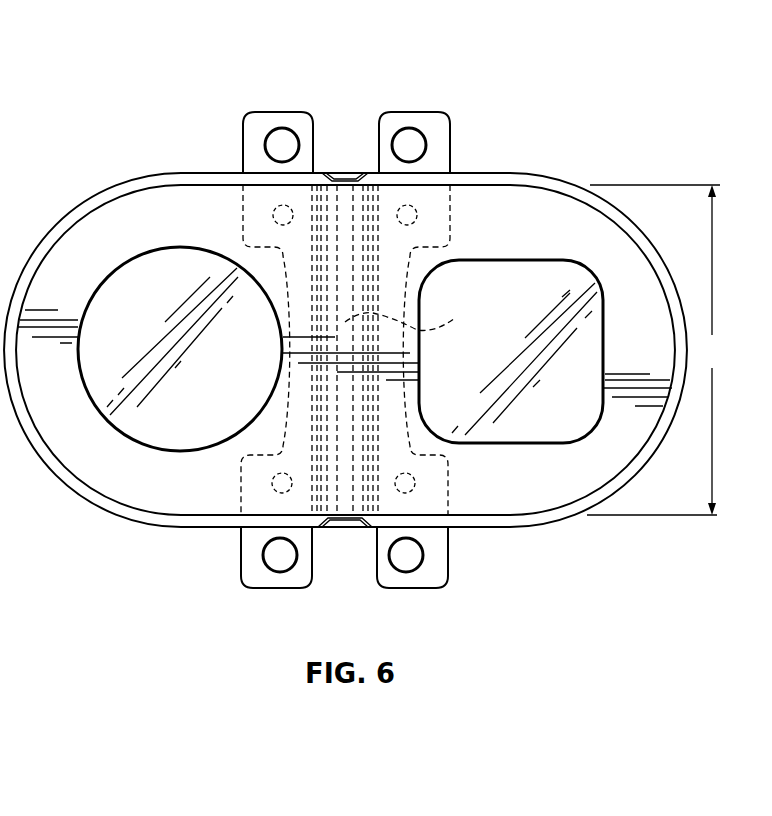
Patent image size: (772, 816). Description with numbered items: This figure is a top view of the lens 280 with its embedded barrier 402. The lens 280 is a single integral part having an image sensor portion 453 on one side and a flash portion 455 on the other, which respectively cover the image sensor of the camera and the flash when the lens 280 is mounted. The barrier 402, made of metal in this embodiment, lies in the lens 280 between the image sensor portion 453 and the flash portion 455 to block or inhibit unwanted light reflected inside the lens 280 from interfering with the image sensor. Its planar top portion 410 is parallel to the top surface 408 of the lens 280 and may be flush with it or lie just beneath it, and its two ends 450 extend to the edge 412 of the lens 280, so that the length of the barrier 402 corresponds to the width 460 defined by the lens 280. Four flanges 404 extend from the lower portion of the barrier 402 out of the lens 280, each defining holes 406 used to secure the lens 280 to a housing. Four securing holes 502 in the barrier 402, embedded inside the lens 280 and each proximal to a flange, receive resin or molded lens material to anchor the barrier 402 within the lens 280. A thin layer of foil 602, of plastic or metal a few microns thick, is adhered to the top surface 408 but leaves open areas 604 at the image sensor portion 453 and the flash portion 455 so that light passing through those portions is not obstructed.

The lens 280 is at (186, 555).
The barrier 402 is at (450, 91).
The flanges 404 is at (432, 580).
The holes 406 is at (412, 555).
The top surface 408 is at (200, 486).
The top portion 410 is at (421, 315).
The edge 412 is at (568, 513).
The ends 450 is at (346, 181).
The image sensor portion 453 is at (126, 211).
The flash portion 455 is at (557, 221).
The width 460 is at (660, 350).
The securing holes 502 is at (412, 483).
The foil 602 is at (532, 490).
The open areas 604 is at (230, 377).